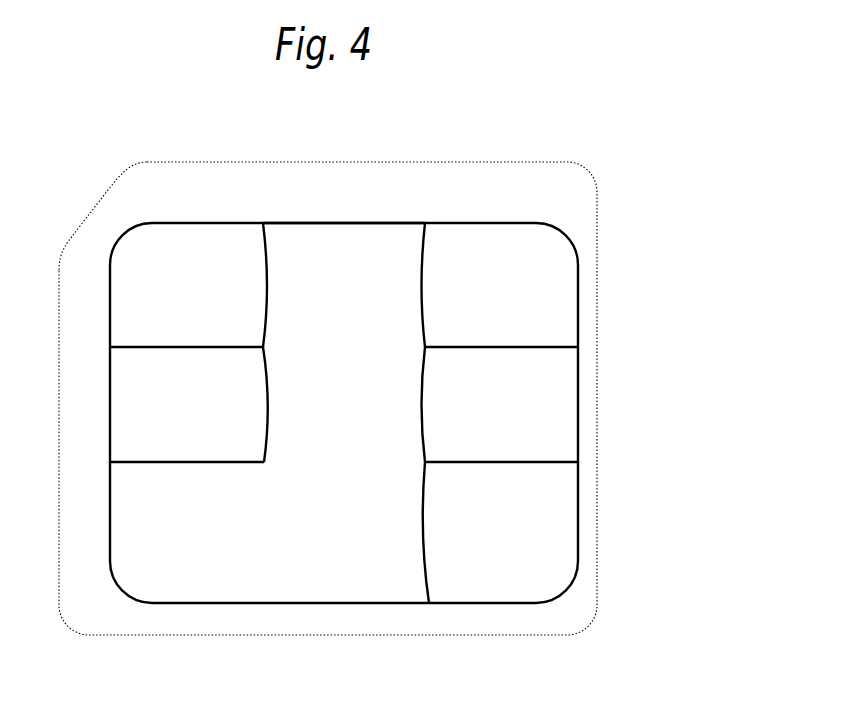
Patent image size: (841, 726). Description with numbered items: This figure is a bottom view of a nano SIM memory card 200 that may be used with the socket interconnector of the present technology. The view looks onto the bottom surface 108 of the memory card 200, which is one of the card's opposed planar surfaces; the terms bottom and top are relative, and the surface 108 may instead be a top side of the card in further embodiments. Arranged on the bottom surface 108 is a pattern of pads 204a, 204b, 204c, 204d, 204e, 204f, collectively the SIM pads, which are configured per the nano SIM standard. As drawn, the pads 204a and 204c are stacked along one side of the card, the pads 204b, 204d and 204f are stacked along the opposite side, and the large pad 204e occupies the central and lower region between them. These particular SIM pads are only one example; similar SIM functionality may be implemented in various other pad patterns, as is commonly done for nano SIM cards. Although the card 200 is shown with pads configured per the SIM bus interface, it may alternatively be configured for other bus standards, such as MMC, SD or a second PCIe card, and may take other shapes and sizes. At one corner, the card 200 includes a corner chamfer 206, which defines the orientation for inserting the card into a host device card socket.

The memory card 200 is at (652, 170).
The bottom surface 108 is at (494, 170).
The corner chamfer 206 is at (103, 197).
The pad 204a is at (188, 285).
The pad 204b is at (500, 285).
The pad 204c is at (189, 404).
The pad 204d is at (500, 404).
The pad 204e is at (344, 364).
The pad 204f is at (467, 532).